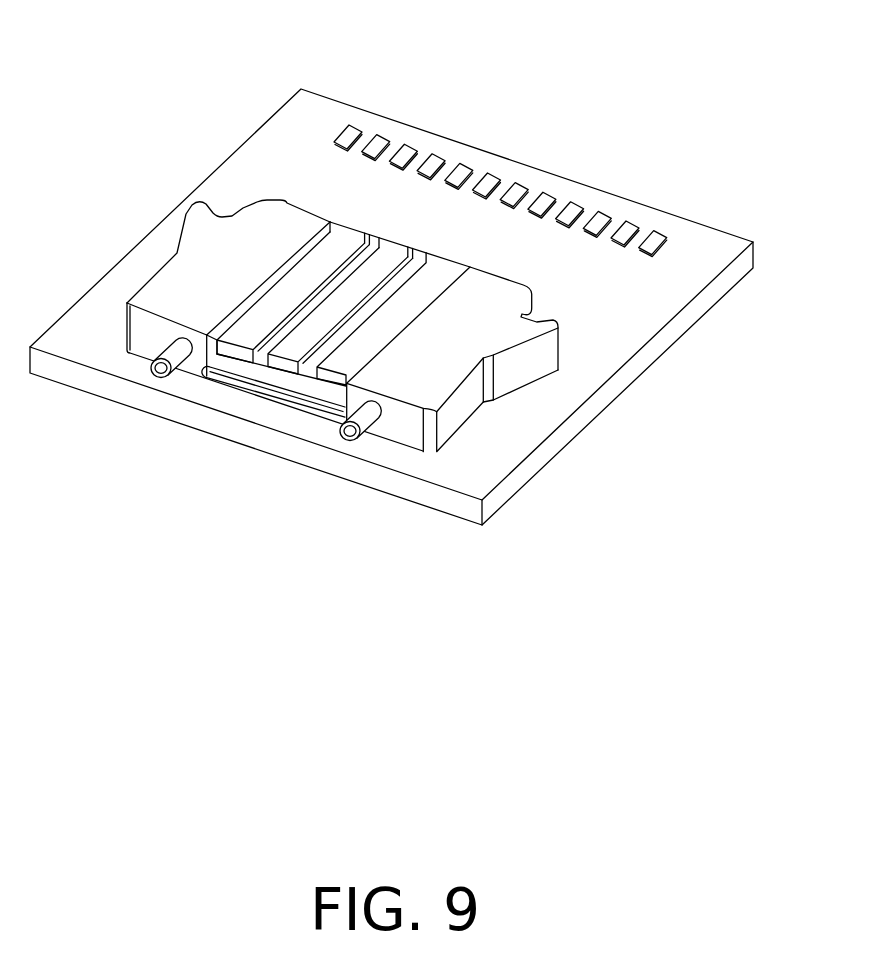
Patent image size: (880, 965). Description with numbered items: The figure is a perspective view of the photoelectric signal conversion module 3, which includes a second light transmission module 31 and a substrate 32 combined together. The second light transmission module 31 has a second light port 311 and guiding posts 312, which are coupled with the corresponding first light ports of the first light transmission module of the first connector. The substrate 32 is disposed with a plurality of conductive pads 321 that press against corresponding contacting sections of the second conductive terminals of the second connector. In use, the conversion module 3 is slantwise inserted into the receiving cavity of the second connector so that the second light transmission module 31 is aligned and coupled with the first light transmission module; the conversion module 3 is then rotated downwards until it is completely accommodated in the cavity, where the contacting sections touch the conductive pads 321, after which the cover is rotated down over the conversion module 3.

The photoelectric signal conversion module 3 is at (391, 293).
The second light transmission module 31 is at (312, 392).
The second light port 311 is at (263, 393).
The guiding posts 312 is at (173, 352).
The substrate 32 is at (391, 263).
The conductive pads 321 is at (352, 128).